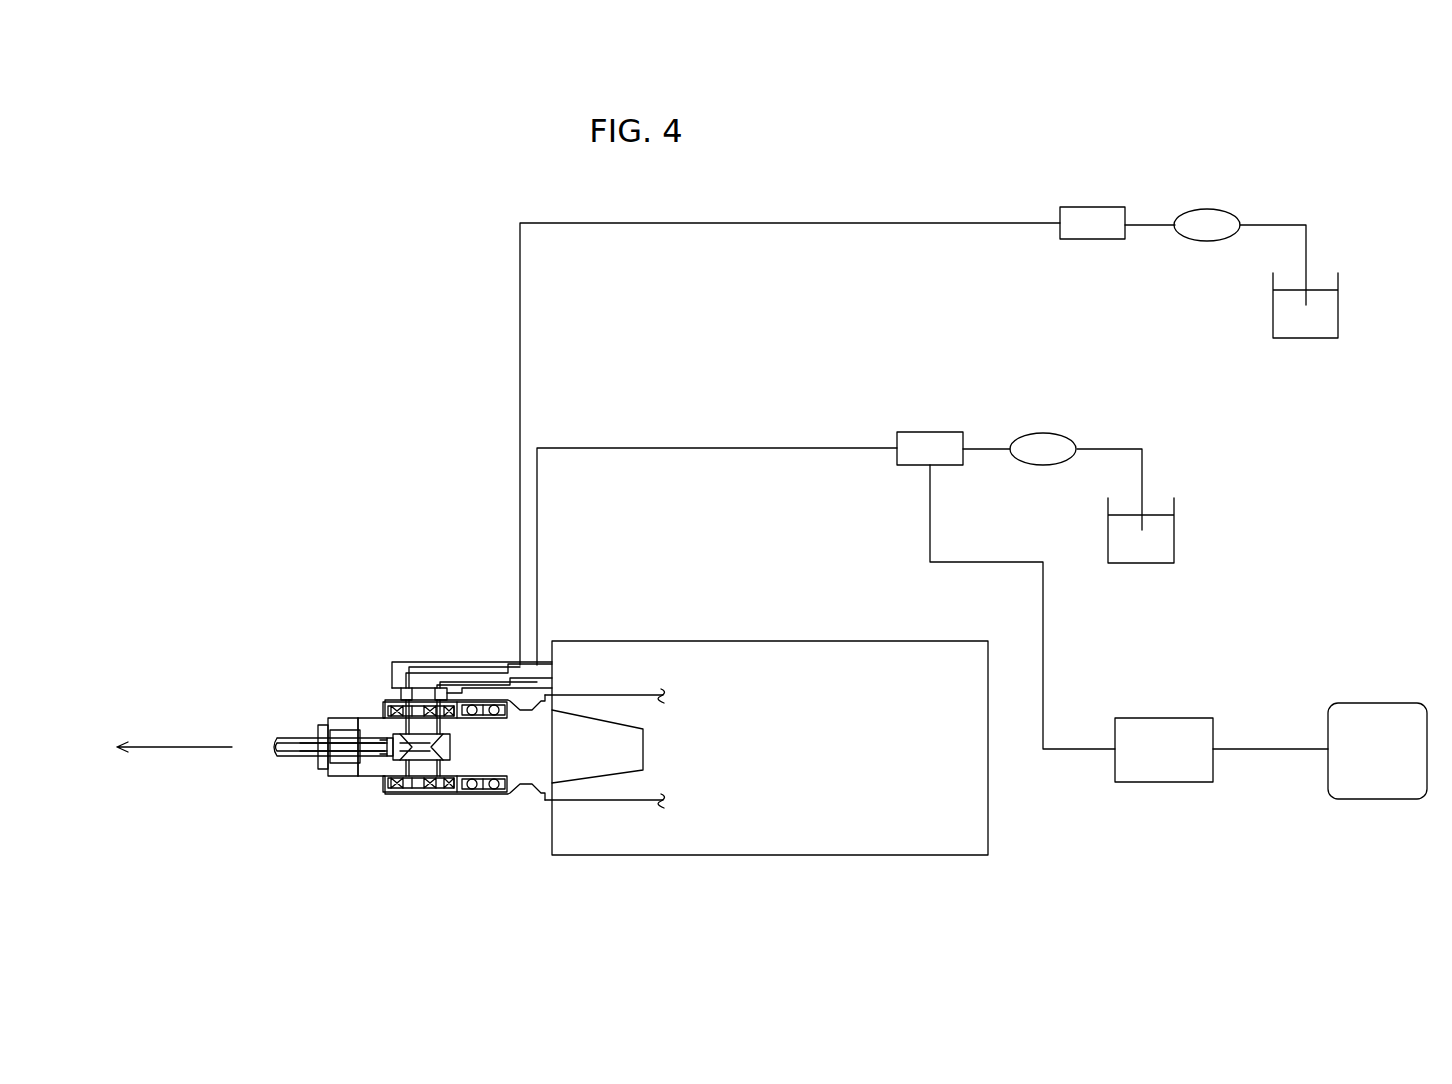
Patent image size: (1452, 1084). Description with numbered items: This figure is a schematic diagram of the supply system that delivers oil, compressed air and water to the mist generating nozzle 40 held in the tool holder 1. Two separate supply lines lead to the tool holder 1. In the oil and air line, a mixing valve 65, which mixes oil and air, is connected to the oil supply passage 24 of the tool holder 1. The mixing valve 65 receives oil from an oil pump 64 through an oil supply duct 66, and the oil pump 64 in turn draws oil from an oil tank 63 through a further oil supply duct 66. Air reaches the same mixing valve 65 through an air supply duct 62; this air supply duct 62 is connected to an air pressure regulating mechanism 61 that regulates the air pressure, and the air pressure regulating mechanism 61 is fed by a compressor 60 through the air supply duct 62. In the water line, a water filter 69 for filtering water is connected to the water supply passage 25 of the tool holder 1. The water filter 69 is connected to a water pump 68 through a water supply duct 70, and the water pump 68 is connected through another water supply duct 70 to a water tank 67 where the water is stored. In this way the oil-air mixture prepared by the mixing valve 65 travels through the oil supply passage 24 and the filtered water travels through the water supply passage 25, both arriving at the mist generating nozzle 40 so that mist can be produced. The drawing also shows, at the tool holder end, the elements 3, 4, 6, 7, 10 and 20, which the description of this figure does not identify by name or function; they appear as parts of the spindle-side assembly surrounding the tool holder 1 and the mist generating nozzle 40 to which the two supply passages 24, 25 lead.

The tool holder 1 is at (397, 613).
The spindle head 3 is at (735, 655).
The spindle 4 is at (608, 692).
The tube 6 is at (308, 740).
The inner tube 7 is at (293, 752).
The housing 10 is at (372, 723).
The rotary joint 20 is at (390, 702).
The oil supply passage 24 is at (714, 449).
The water supply passage 25 is at (714, 224).
The mist generating nozzle 40 is at (452, 748).
The compressor 60 is at (1360, 778).
The air pressure regulating mechanism 61 is at (1157, 775).
The air supply duct 62 is at (1046, 652).
The oil tank 63 is at (1160, 542).
The oil pump 64 is at (1032, 447).
The mixing valve 65 is at (914, 447).
The oil supply duct 66 is at (980, 447).
The water tank 67 is at (1318, 322).
The water pump 68 is at (1198, 222).
The water filter 69 is at (1080, 222).
The water supply duct 70 is at (1143, 222).